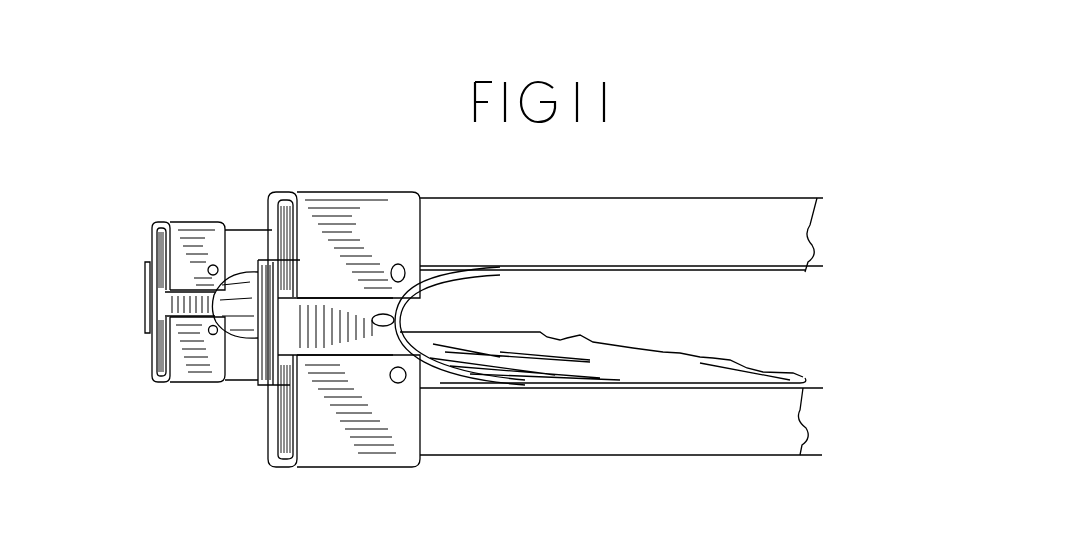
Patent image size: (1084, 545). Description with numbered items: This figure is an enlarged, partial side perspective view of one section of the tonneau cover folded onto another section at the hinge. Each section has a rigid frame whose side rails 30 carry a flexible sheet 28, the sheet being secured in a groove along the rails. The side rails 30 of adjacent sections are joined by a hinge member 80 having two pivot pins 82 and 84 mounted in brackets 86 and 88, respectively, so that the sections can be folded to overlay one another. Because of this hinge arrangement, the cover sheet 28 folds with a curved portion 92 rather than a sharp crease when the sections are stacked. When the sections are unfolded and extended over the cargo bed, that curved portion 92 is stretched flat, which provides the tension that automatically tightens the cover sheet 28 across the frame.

The hinge member 80 is at (260, 238).
The bracket 86 is at (188, 230).
The pivot pin 82 is at (392, 270).
The bracket 88 is at (178, 372).
The pivot pin 84 is at (395, 384).
The curved portion 92 is at (400, 323).
The side rail 30 is at (585, 210).
The sheet 28 is at (613, 273).